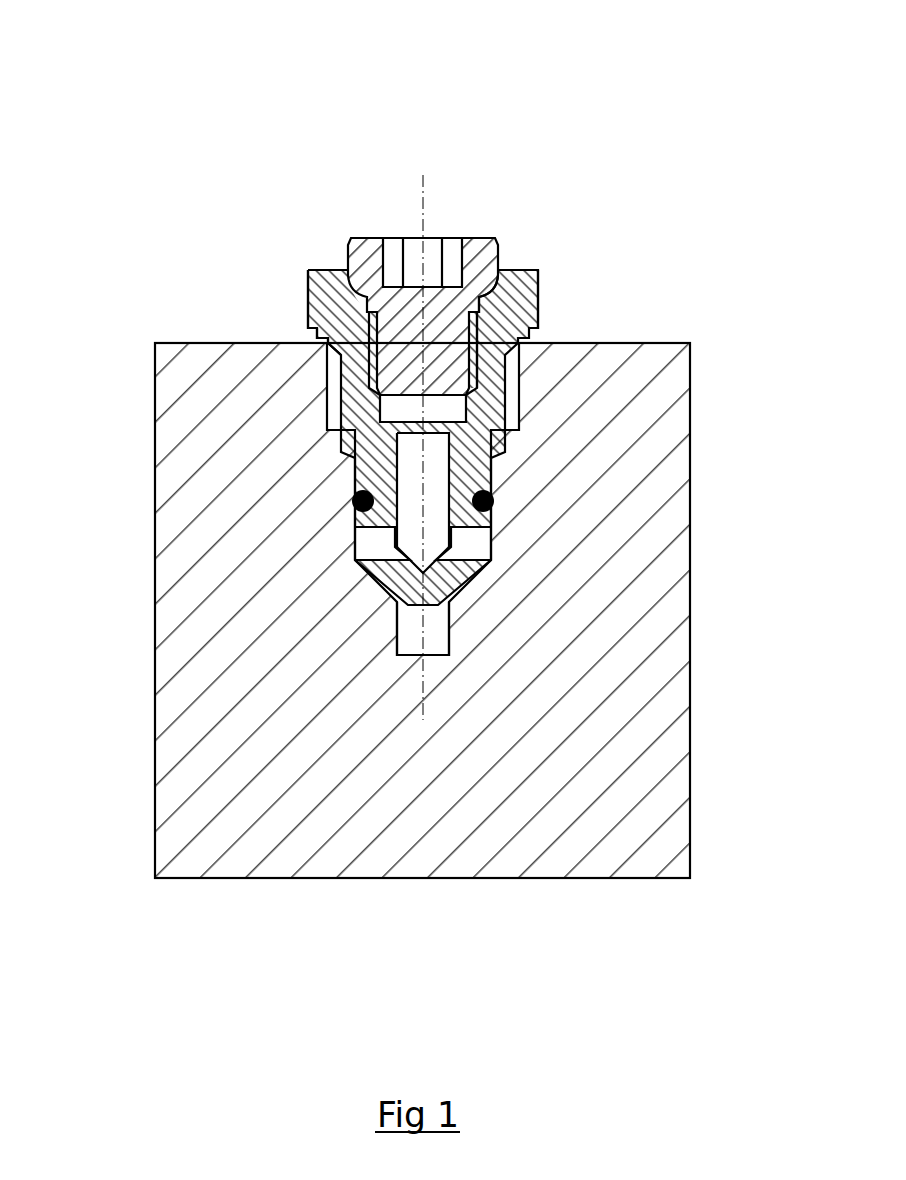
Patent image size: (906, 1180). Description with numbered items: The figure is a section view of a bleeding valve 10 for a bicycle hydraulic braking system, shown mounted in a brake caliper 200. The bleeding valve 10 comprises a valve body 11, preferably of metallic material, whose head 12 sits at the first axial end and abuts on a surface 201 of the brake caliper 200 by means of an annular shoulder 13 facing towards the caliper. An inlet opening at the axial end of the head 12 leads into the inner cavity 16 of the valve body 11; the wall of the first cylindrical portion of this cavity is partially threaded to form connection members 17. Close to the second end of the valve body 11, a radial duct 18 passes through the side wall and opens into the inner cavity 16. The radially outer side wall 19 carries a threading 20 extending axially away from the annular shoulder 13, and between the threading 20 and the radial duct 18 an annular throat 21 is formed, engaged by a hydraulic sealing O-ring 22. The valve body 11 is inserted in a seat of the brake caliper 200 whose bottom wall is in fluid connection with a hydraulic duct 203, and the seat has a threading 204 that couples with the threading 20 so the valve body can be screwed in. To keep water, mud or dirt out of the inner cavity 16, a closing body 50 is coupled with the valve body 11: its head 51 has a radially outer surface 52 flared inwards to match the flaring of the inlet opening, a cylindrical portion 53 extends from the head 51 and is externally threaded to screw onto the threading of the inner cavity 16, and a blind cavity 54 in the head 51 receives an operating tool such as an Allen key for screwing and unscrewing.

The bleeding valve 10 is at (252, 146).
The valve body 11 is at (298, 300).
The head 12 is at (312, 333).
The annular shoulder 13 is at (318, 345).
The inner cavity 16 is at (433, 517).
The connection members 17 is at (473, 330).
The radial duct 18 is at (373, 550).
The radially outer side wall 19 is at (563, 341).
The threading 20 is at (505, 367).
The annular throat 21 is at (497, 520).
The hydraulic sealing O-ring 22 is at (351, 505).
The closing body 50 is at (472, 222).
The head 51 is at (362, 257).
The radially outer surface 52 is at (362, 302).
The cylindrical portion 53 is at (413, 360).
The blind cavity 54 is at (418, 263).
The brake caliper 200 is at (222, 810).
The surface 201 is at (675, 343).
The hydraulic duct 203 is at (410, 635).
The threading 204 is at (340, 407).